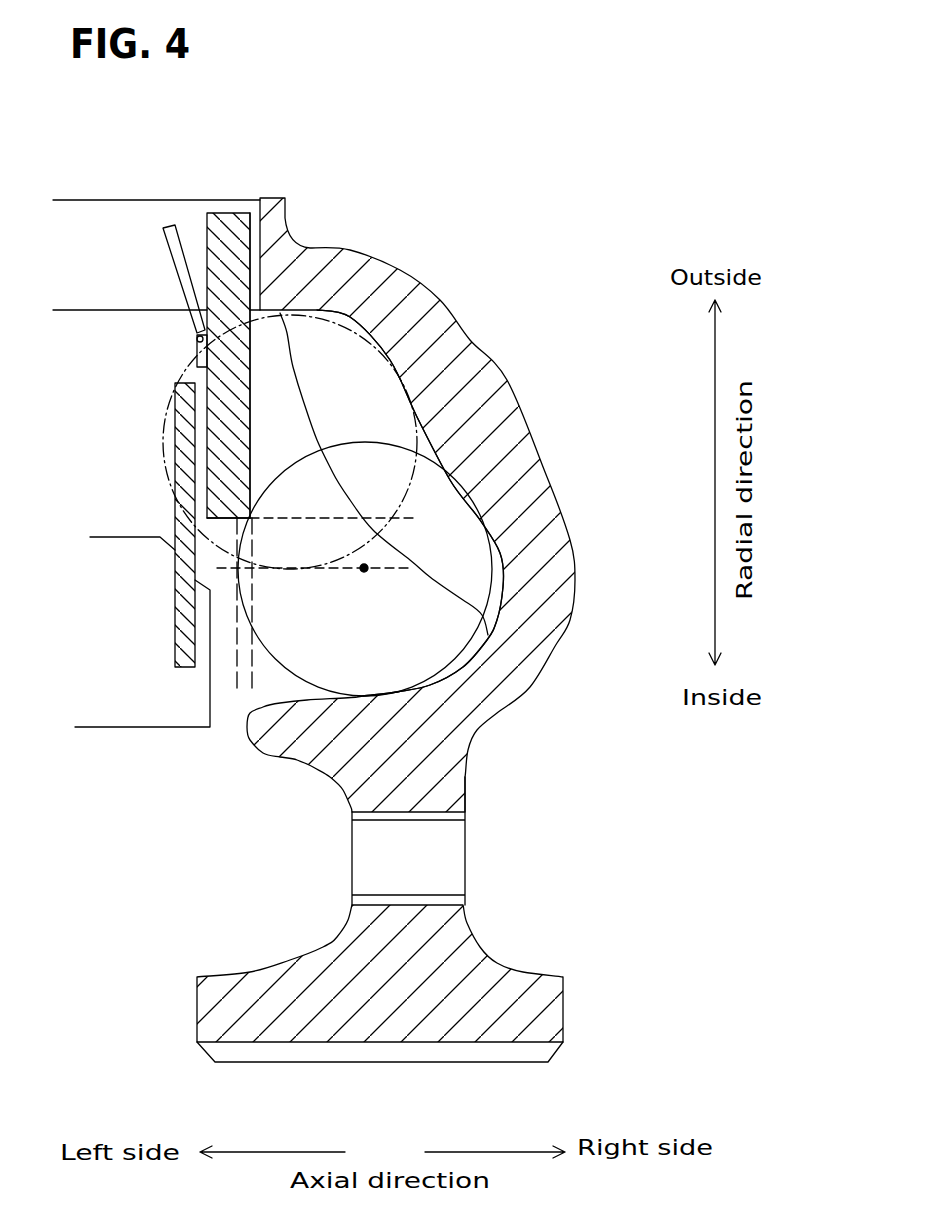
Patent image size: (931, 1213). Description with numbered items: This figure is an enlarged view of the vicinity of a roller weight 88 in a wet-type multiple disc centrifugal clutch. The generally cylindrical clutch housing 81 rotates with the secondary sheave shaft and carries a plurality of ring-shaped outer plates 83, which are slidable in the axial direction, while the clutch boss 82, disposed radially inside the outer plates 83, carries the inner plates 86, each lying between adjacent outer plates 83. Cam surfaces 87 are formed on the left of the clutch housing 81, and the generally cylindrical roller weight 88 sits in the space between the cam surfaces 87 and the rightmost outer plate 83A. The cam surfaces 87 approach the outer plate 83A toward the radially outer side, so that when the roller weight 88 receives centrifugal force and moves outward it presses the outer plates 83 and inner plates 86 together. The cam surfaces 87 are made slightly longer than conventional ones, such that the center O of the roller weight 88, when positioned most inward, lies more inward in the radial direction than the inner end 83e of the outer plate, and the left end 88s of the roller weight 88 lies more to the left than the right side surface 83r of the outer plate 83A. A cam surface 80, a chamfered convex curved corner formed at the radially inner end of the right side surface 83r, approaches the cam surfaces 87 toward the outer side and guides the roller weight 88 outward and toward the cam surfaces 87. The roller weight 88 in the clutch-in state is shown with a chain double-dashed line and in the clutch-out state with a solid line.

The clutch housing 81 is at (337, 250).
The clutch boss 82 is at (135, 728).
The outer plate 83 is at (224, 317).
The outer plate 83A is at (233, 213).
The right end 83r is at (264, 442).
The inner end 83e is at (212, 535).
The cam surface 80 is at (258, 525).
The inner plate 86 is at (172, 640).
The cam surface 87 is at (438, 448).
The roller weight 88 is at (165, 398).
The left end 88s is at (224, 577).
The center O is at (364, 570).